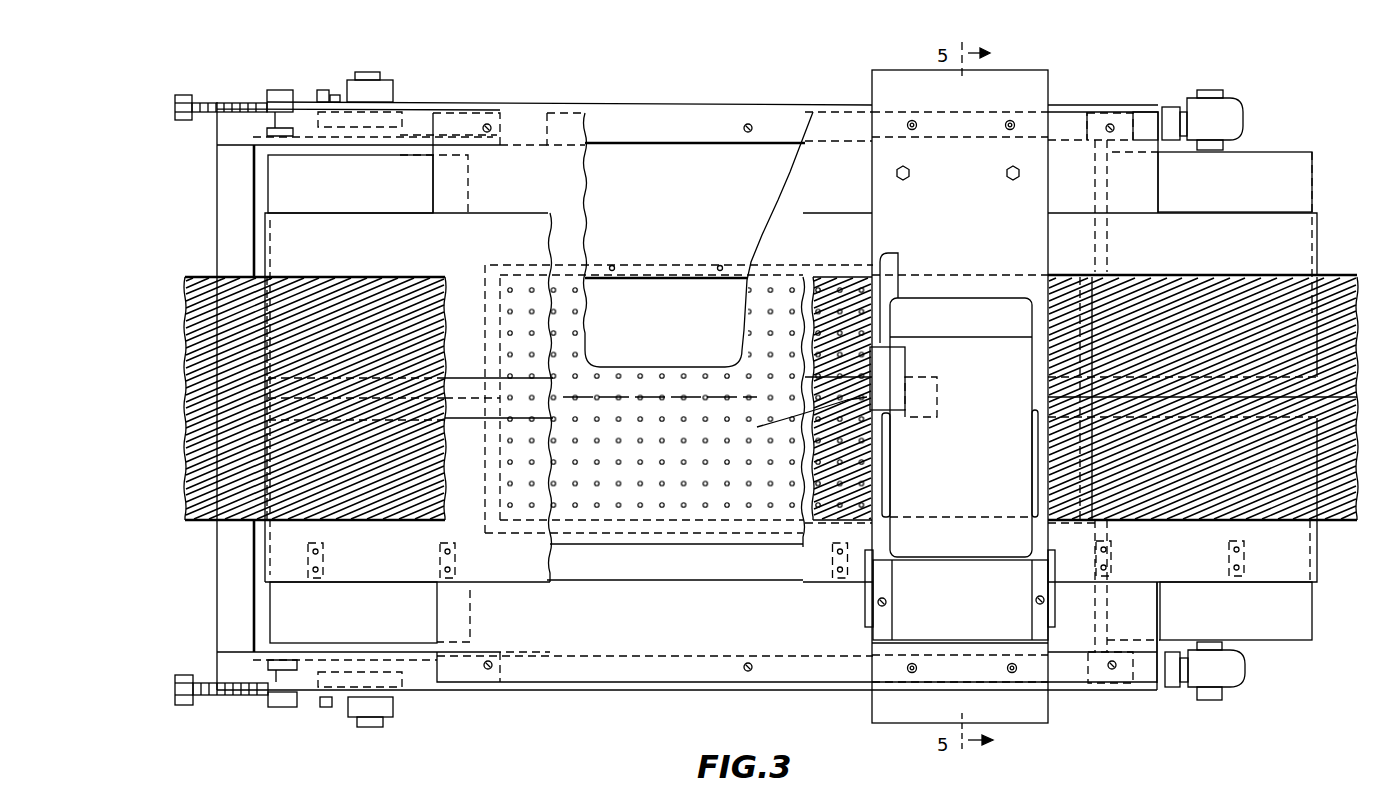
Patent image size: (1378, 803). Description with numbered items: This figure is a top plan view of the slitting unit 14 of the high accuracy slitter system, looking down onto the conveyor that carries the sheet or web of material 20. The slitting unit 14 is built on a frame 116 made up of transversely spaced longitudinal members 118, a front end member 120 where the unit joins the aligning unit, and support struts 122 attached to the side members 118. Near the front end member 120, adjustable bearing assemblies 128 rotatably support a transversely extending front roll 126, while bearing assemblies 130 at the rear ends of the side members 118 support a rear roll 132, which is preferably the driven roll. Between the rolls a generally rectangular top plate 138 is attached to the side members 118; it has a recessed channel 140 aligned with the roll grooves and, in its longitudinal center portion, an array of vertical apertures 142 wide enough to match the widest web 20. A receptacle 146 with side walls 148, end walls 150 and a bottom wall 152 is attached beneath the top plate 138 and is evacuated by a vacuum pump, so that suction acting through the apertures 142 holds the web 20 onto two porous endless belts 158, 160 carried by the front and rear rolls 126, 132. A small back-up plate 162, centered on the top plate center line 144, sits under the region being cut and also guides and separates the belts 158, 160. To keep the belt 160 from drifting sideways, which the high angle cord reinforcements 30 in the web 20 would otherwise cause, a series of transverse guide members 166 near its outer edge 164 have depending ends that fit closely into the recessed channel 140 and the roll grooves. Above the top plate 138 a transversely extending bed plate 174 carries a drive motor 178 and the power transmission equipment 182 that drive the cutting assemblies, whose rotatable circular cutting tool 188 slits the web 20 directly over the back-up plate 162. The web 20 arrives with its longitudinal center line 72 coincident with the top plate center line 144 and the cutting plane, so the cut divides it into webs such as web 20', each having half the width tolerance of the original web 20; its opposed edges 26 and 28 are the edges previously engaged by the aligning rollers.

The slitting unit 14 is at (622, 715).
The web of material 20 is at (527, 404).
The web 20' is at (1207, 419).
The web edge 26 is at (1245, 522).
The web edge 28 is at (1203, 272).
The high angle cord reinforcements 30 is at (241, 276).
The longitudinal center line 72 is at (470, 397).
The frame 116 is at (790, 693).
The longitudinal members 118 is at (693, 122).
The front end member 120 is at (232, 207).
The support struts 122 is at (553, 128).
The front roll 126 is at (368, 184).
The adjustable bearing assemblies 128 is at (373, 90).
The bearing assemblies 130 is at (1232, 117).
The rear roll 132 is at (1203, 226).
The top plate 138 is at (767, 222).
The recessed channel 140 is at (708, 563).
The vertical apertures 142 is at (600, 373).
The longitudinal center line 144 is at (723, 395).
The receptacle 146 is at (643, 272).
The side walls 148 is at (672, 275).
The end walls 150 is at (497, 440).
The bottom wall 152 is at (666, 322).
The endless belt 158 is at (498, 237).
The endless belt 160 is at (400, 565).
The back-up plate 162 is at (917, 420).
The outer edge 164 is at (518, 587).
The guide members 166 is at (325, 562).
The bed plate 174 is at (1008, 80).
The drive motor 178 is at (960, 427).
The power transmission equipment 182 is at (960, 595).
The cutting tool 188 is at (812, 347).